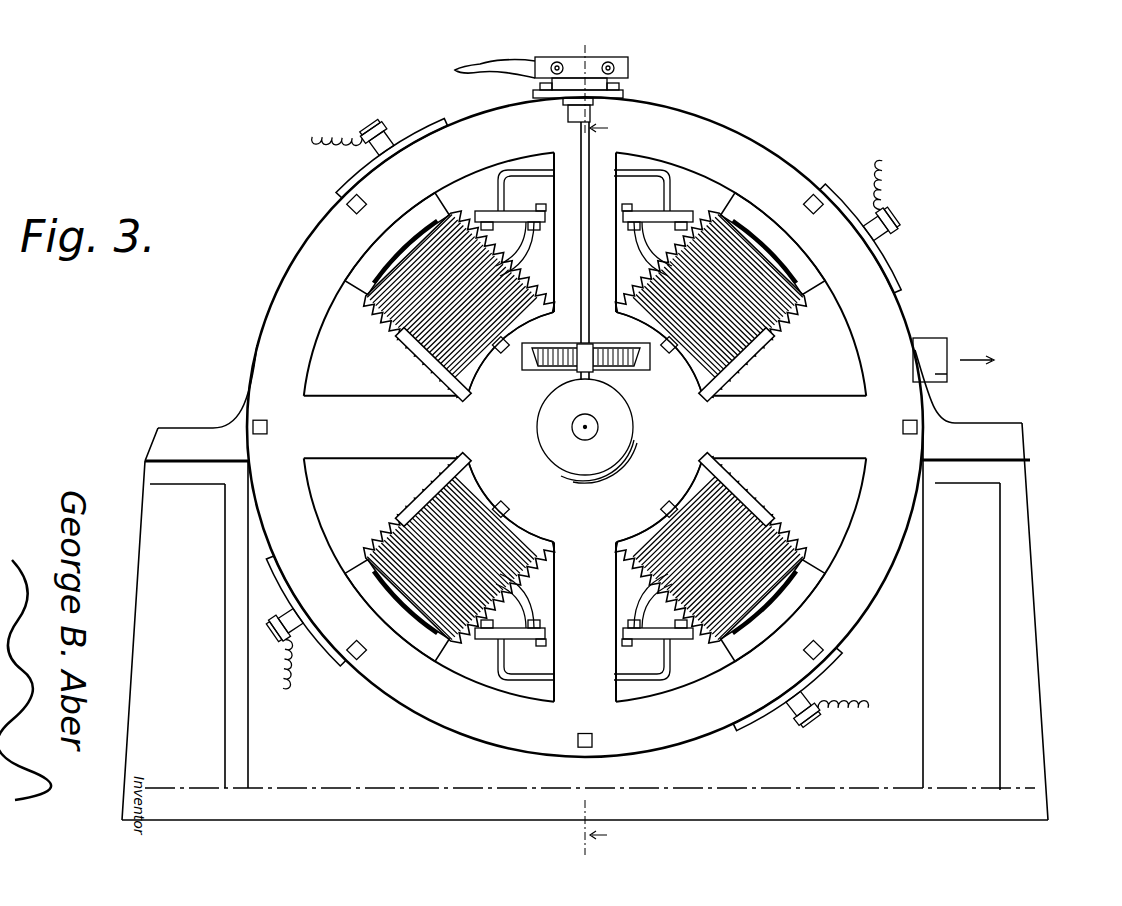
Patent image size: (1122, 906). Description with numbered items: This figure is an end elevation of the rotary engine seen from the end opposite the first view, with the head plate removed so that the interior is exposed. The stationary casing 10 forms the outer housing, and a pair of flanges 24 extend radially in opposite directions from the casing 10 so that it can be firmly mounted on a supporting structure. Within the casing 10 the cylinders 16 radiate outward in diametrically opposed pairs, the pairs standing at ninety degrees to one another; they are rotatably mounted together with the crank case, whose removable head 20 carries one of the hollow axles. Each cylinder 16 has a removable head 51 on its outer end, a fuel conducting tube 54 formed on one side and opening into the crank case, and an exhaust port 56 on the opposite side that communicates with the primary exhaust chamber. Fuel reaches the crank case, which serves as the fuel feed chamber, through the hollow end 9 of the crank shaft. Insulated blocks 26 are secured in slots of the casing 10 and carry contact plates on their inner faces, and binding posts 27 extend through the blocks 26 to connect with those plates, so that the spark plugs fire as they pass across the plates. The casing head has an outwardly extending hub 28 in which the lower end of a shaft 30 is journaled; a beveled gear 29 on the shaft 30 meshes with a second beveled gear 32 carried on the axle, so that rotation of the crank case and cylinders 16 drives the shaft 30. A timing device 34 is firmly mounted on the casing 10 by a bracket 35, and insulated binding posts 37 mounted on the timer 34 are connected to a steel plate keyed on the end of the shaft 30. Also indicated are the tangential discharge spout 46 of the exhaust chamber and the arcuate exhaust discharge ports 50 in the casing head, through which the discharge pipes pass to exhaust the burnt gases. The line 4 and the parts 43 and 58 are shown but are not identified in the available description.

The section line 4- 4 is at (604, 450).
The hollow end of the crank shaft 9 is at (578, 427).
The stationary casing 10 is at (716, 126).
The cylinder blocks 16 is at (796, 532).
The removable head of the crank case 20 is at (712, 372).
The flanges 24 is at (1010, 425).
The insulated blocks 26 is at (832, 680).
The binding posts 27 is at (790, 742).
The hub 28 is at (552, 436).
The beveled gear 29 is at (560, 349).
The shaft 30 is at (596, 126).
The second beveled gear 32 is at (527, 368).
The timing device 34 is at (625, 93).
The bracket 35 is at (550, 92).
The binding posts 37 is at (622, 66).
The handle 43 is at (470, 68).
The tangential discharge spout 46 is at (932, 352).
The arcuate exhaust discharge ports 50 is at (475, 211).
The removable heads 51 is at (802, 604).
The fuel conducting tube 54 is at (770, 512).
The exhaust port 56 is at (577, 425).
The bolt nut 58 is at (485, 648).